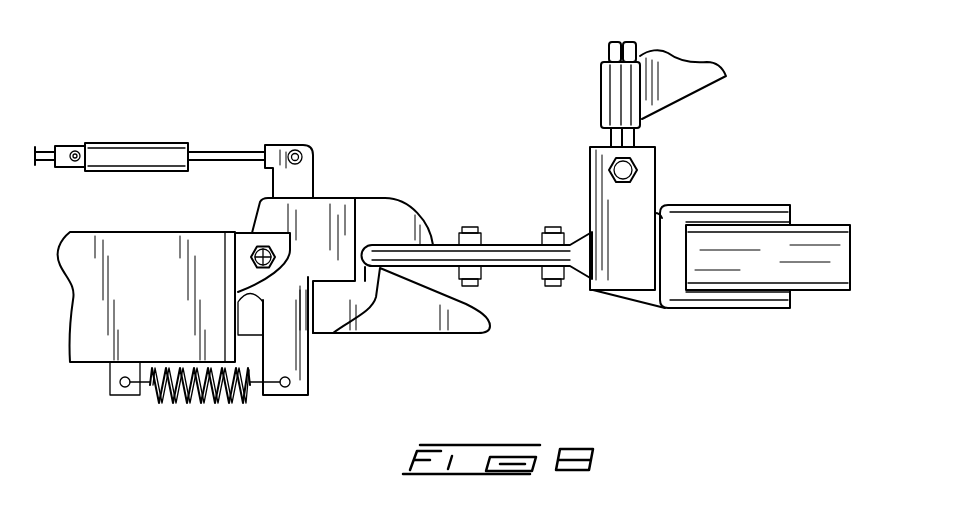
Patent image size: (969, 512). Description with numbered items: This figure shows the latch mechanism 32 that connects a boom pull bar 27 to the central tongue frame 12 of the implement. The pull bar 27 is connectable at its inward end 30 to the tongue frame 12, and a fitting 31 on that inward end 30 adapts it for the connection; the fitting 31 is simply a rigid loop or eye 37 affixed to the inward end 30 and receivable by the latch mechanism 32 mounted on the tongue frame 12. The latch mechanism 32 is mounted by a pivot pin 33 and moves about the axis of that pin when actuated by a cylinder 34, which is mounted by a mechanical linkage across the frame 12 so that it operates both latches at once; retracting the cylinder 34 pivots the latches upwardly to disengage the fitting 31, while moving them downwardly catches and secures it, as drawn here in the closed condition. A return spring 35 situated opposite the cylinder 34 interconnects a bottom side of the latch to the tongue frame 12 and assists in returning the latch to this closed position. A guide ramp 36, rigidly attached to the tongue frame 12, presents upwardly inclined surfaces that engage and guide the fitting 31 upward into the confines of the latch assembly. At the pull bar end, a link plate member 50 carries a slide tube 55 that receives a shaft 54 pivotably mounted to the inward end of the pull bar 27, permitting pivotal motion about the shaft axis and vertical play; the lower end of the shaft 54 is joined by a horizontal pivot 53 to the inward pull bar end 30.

The tongue frame 12 is at (64, 296).
The boom pull bar 27 is at (812, 304).
The inward end 30 is at (803, 230).
The fitting 31 is at (520, 272).
The latch mechanism 32 is at (390, 190).
The pivot pin 33 is at (258, 244).
The cylinder 34 is at (131, 155).
The return spring 35 is at (200, 404).
The guide ramp 36 is at (480, 301).
The loop or eye 37 is at (450, 252).
The link plate member 50 is at (720, 94).
The horizontal pivot 53 is at (637, 176).
The shaft 54 is at (612, 47).
The slide tube 55 is at (643, 122).